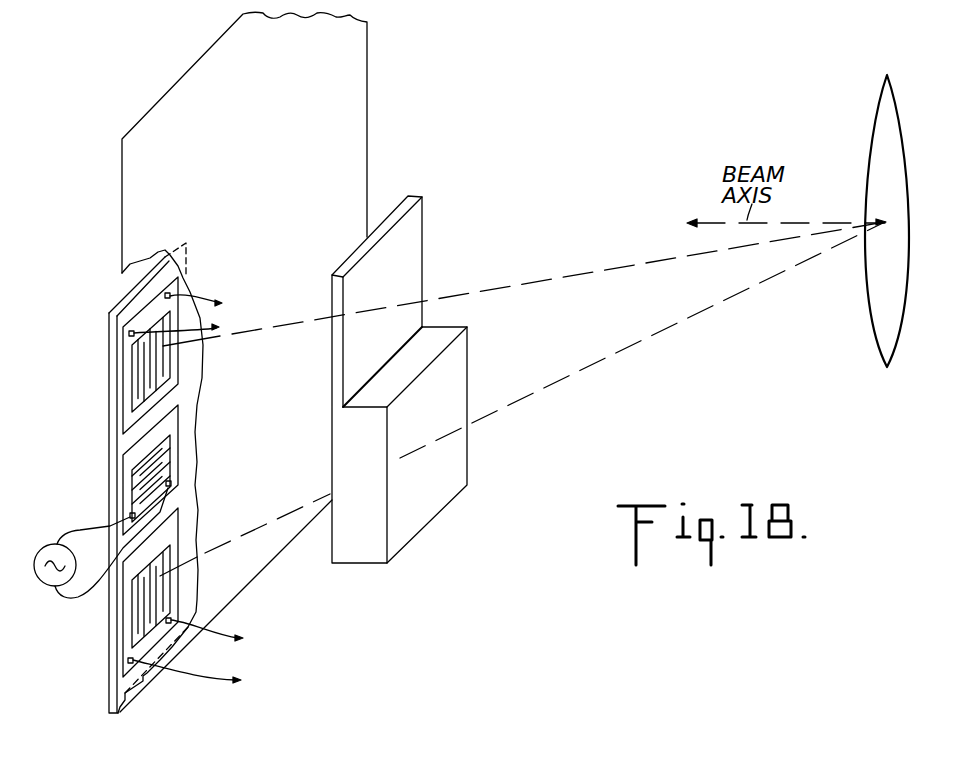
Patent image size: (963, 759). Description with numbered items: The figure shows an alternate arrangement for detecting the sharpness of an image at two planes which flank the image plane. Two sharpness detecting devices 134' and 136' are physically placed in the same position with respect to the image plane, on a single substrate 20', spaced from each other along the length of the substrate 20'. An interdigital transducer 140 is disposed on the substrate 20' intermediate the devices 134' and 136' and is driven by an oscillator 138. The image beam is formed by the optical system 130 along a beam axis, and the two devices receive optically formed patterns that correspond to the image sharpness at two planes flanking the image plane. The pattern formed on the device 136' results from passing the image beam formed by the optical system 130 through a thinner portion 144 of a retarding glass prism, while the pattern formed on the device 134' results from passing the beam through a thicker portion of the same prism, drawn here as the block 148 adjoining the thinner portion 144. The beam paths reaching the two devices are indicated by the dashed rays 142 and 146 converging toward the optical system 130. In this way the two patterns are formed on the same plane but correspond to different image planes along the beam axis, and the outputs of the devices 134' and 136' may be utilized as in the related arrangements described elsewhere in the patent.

The optical system 130 is at (877, 138).
The first light ray 142 is at (590, 273).
The second light ray 146 is at (627, 348).
The thinner portion of retarding glass prism 144 is at (408, 242).
The block 148 is at (453, 378).
The substrate 20' is at (202, 477).
The sharpness detecting device 136' is at (209, 362).
The interdigital transducer 140 is at (140, 472).
The sharpness detecting device 134' is at (145, 595).
The oscillator 138 is at (46, 544).